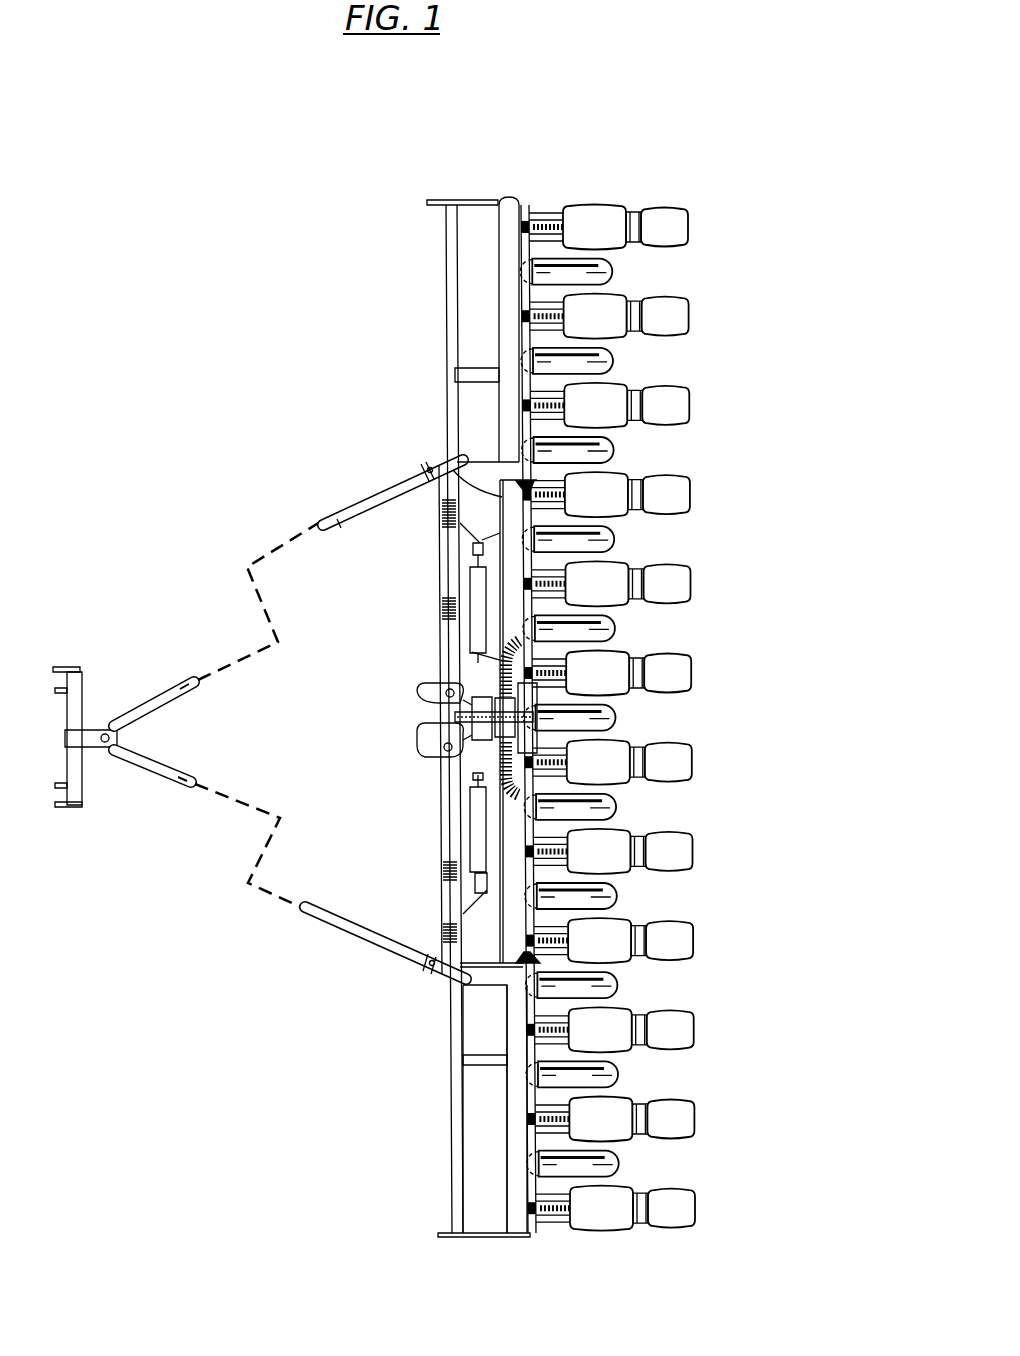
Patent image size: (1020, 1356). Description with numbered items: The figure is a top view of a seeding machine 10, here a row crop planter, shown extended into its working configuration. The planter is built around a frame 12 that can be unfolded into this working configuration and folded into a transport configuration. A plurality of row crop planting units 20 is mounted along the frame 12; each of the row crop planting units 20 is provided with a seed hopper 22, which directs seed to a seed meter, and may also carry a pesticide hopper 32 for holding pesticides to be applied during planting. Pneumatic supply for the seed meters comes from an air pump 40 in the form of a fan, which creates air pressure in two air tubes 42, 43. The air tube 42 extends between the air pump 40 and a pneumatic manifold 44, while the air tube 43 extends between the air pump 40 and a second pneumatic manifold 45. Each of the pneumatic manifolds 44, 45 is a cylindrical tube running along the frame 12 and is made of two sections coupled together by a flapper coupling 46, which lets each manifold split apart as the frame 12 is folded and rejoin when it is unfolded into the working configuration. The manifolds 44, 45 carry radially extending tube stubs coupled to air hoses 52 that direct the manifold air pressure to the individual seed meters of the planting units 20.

The seeding machine 10 is at (243, 412).
The frame 12 is at (440, 557).
The row crop planting units 20 is at (698, 670).
The seed hopper 22 is at (619, 298).
The pesticide hopper 32 is at (687, 304).
The air pump 40 is at (440, 742).
The air tube 42 is at (500, 652).
The air tube 43 is at (503, 778).
The pneumatic manifold 44 is at (598, 604).
The pneumatic manifold 45 is at (600, 822).
The flapper coupling 46 is at (533, 478).
The air hoses 52 is at (527, 228).